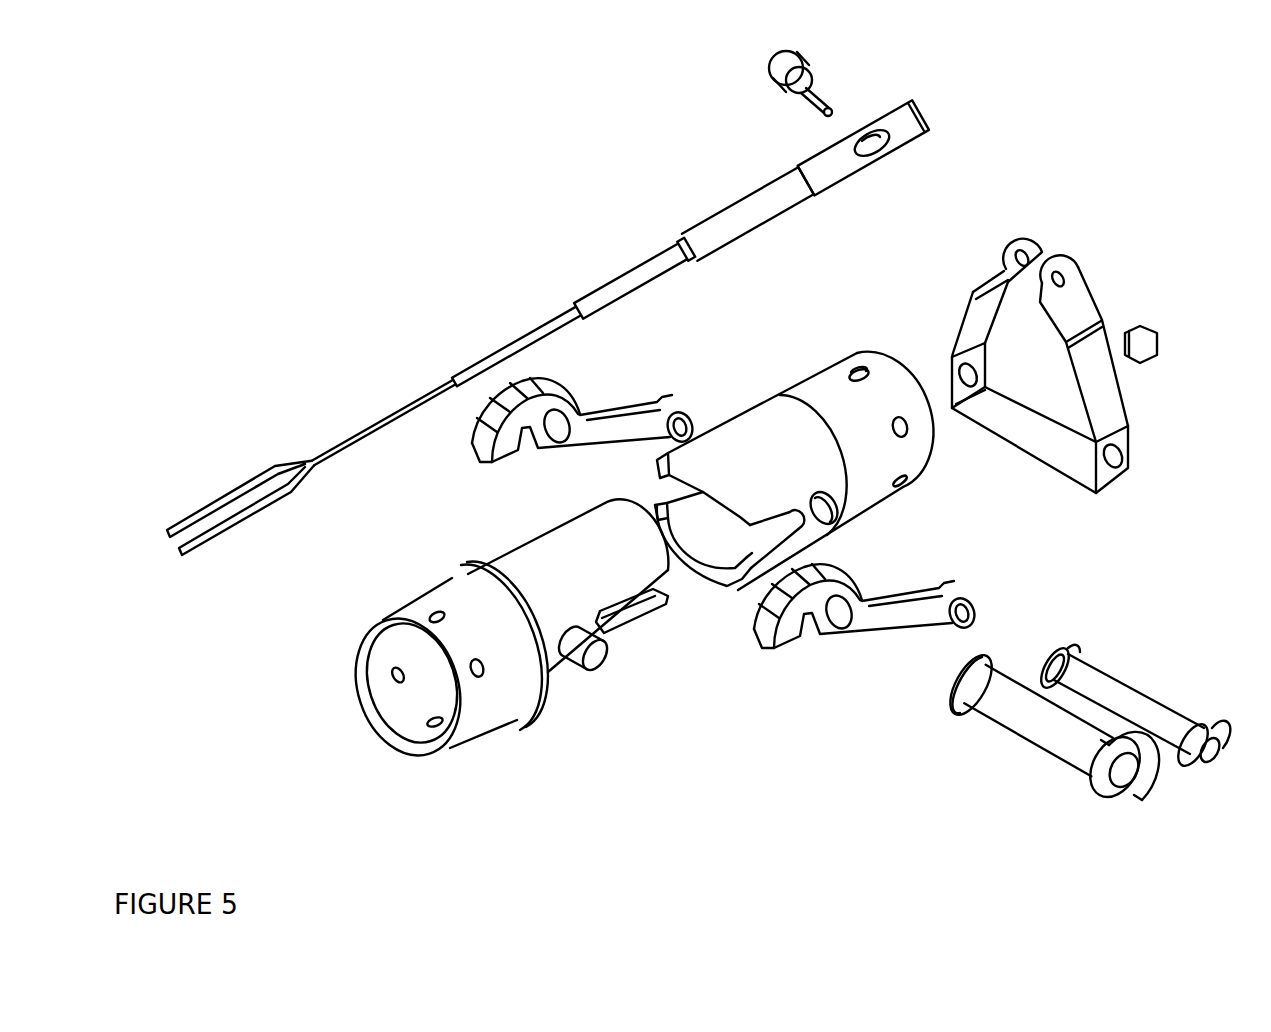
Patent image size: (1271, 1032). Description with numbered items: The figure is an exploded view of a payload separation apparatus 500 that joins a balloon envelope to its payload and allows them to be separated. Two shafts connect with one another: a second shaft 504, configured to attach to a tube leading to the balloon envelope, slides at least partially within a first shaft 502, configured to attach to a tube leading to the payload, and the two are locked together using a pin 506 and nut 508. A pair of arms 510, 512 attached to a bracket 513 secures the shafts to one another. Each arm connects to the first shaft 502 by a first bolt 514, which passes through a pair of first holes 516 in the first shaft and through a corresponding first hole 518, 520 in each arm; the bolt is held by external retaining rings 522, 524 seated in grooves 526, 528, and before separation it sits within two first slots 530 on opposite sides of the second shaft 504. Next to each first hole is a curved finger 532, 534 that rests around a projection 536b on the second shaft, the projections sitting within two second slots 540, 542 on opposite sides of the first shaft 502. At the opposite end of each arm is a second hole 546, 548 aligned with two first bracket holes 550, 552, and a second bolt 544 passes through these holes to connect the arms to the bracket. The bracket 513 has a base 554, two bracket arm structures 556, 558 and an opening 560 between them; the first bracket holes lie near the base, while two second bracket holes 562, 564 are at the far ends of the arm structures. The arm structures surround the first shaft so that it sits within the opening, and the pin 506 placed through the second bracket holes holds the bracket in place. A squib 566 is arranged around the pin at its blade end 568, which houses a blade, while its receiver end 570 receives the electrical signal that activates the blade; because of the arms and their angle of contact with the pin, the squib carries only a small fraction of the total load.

The payload separation apparatus 500 is at (192, 873).
The first shaft 502 is at (783, 471).
The second shaft 504 is at (522, 634).
The pin 506 is at (782, 58).
The nut 508 is at (1150, 328).
The arm 510 is at (603, 437).
The arm 512 is at (886, 617).
The bracket 513 is at (1023, 238).
The first bolt 514 is at (1068, 723).
The first hole 516 is at (817, 527).
The corresponding first hole 518 is at (555, 432).
The corresponding first hole 520 is at (840, 610).
The external retaining ring 522 is at (977, 658).
The external retaining ring 524 is at (1093, 773).
The groove 526 is at (983, 657).
The groove 528 is at (1135, 738).
The first slot 530 is at (620, 613).
The curved finger 532 is at (513, 450).
The curved finger 534 is at (802, 630).
The projection 536b is at (590, 675).
The second slot 540 is at (683, 492).
The second slot 542 is at (790, 537).
The second bolt 544 is at (1152, 698).
The second hole 546 is at (685, 402).
The second hole 548 is at (967, 593).
The first bracket hole 550 is at (962, 373).
The first bracket hole 552 is at (1113, 453).
The base 554 is at (1012, 443).
The bracket arm structure 556 is at (977, 297).
The bracket arm structure 558 is at (1123, 398).
The opening 560 is at (1073, 341).
The second bracket hole 562 is at (1023, 257).
The second bracket hole 564 is at (1058, 279).
The squib 566 is at (692, 225).
The blade end 568 is at (895, 102).
The receiver end 570 is at (247, 483).